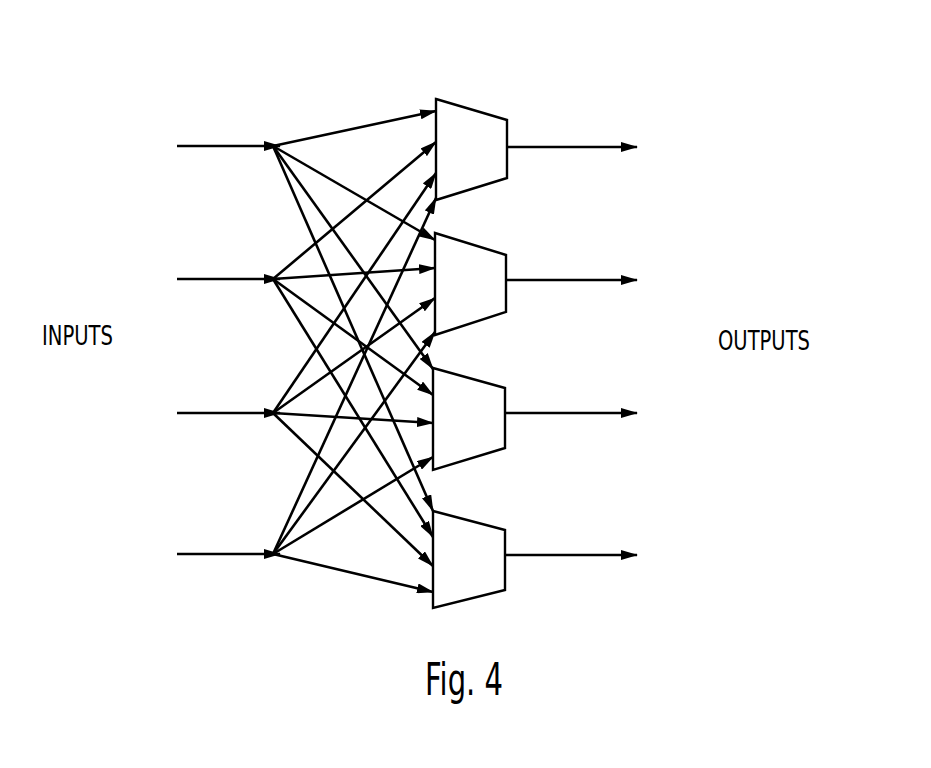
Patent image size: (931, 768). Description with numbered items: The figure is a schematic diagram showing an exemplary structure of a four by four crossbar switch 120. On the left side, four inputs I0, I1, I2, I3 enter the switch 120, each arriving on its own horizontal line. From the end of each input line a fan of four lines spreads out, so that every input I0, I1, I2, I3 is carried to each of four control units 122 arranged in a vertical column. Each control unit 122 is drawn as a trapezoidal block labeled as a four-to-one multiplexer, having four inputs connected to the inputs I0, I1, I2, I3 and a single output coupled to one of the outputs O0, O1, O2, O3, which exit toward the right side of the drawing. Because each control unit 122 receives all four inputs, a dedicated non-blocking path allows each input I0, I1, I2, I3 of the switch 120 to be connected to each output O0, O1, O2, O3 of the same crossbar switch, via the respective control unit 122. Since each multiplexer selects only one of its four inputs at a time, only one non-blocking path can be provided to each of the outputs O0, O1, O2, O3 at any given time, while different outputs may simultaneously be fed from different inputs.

The crossbar switch 120 is at (467, 42).
The control unit 122 is at (507, 118).
The input I0 is at (212, 147).
The input I1 is at (212, 281).
The input I2 is at (212, 414).
The input I3 is at (212, 555).
The output O0 is at (589, 142).
The output O1 is at (591, 281).
The output O2 is at (590, 406).
The output O3 is at (590, 554).